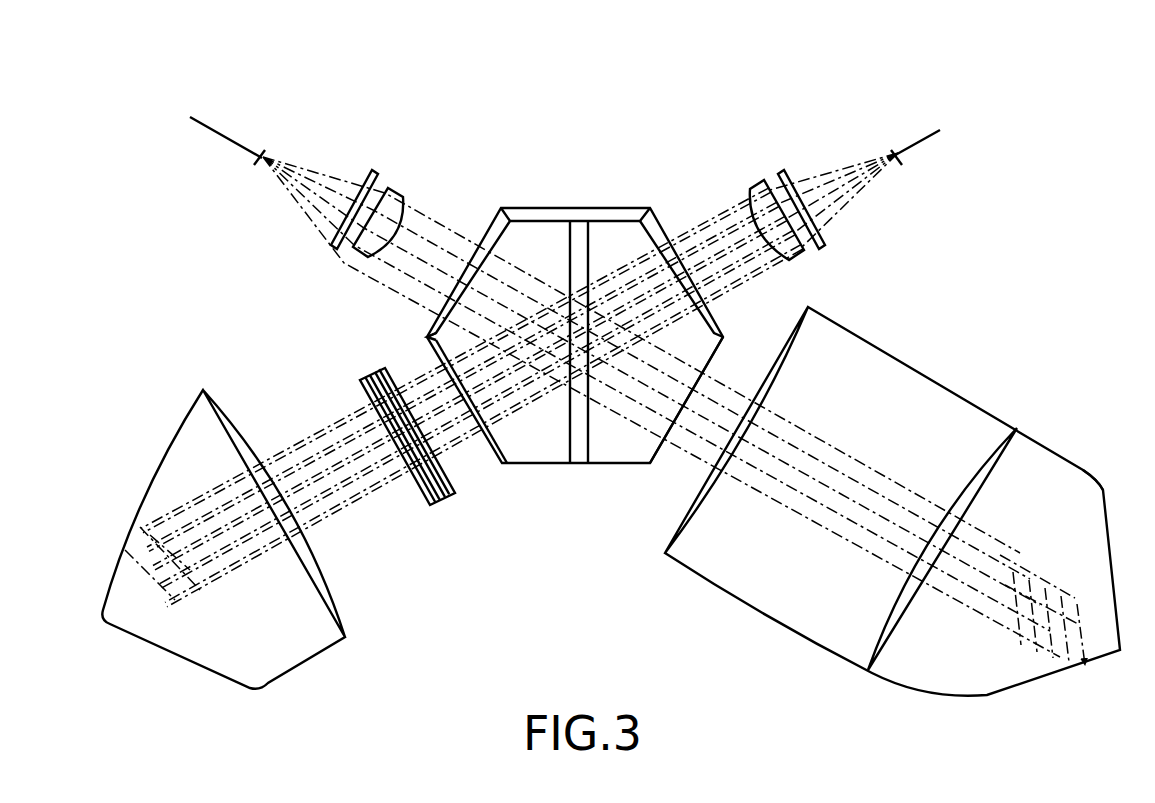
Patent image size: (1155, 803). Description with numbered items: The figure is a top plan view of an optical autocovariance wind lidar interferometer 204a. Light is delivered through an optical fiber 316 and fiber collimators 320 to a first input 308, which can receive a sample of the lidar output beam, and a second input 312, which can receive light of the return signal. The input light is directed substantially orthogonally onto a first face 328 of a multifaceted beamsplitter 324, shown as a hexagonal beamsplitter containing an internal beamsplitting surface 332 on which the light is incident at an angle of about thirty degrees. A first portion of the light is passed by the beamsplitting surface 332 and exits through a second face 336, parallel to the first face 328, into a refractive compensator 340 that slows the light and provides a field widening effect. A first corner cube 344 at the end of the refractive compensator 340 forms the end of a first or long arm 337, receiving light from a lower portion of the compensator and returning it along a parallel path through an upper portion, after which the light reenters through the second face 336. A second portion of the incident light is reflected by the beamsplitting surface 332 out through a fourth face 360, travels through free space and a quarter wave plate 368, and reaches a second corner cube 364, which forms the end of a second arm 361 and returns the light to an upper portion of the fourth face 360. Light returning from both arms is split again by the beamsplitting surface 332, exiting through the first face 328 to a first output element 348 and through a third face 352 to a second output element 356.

The optical autocovariance wind lidar interferometer 204a is at (758, 108).
The first input 308 is at (260, 155).
The second input 312 is at (898, 153).
The optical fiber 316 is at (199, 122).
The fiber collimator 320 is at (391, 203).
The multifaceted beamsplitter 324 is at (520, 247).
The first face 328 is at (437, 323).
The internal beamsplitting surface 332 is at (583, 430).
The second face 336 is at (713, 360).
The first or long arm 337 is at (902, 501).
The refractive compensator 340 is at (977, 422).
The first corner cube 344 is at (1077, 477).
The first output element 348 is at (335, 245).
The third face 352 is at (667, 233).
The second output element 356 is at (825, 247).
The fourth face 360 is at (445, 360).
The second arm 361 is at (205, 505).
The second corner cube 364 is at (153, 503).
The quarter wave plate 368 is at (433, 503).